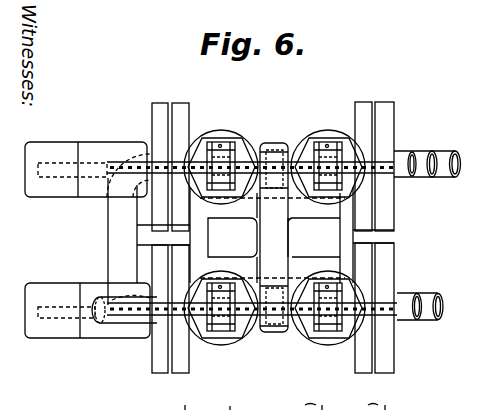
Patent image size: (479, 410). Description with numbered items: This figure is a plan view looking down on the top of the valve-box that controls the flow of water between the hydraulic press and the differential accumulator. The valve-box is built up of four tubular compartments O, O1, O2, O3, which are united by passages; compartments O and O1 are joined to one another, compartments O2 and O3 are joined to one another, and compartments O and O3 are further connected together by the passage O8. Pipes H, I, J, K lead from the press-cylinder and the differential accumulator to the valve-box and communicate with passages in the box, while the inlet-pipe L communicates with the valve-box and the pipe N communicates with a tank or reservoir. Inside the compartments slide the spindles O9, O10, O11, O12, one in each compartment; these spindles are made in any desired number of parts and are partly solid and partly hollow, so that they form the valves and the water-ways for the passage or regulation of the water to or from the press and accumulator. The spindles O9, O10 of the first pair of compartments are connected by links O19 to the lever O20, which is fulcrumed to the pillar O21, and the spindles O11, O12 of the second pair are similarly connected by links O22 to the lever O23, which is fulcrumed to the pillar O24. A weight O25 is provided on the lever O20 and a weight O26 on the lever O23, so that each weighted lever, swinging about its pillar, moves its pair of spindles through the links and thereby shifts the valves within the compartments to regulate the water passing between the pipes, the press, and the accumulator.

The compartment O is at (219, 341).
The compartment O1 is at (322, 340).
The compartment O2 is at (313, 135).
The compartment O3 is at (218, 135).
The passage O8 is at (148, 229).
The spindle O9 is at (195, 312).
The spindle O10 is at (340, 320).
The spindle O11 is at (340, 168).
The spindle O12 is at (207, 158).
The links O19 is at (292, 345).
The lever O20 is at (72, 317).
The pillar O21 is at (268, 278).
The links O22 is at (207, 143).
The lever O23 is at (67, 173).
The pillar O24 is at (273, 122).
The weight O25 is at (37, 290).
The weight O26 is at (66, 148).
The pipe K is at (400, 150).
The pipe N is at (427, 150).
The pipe I is at (451, 150).
The pipe J is at (401, 293).
The pipe H is at (432, 293).
The inlet-pipe L is at (105, 297).